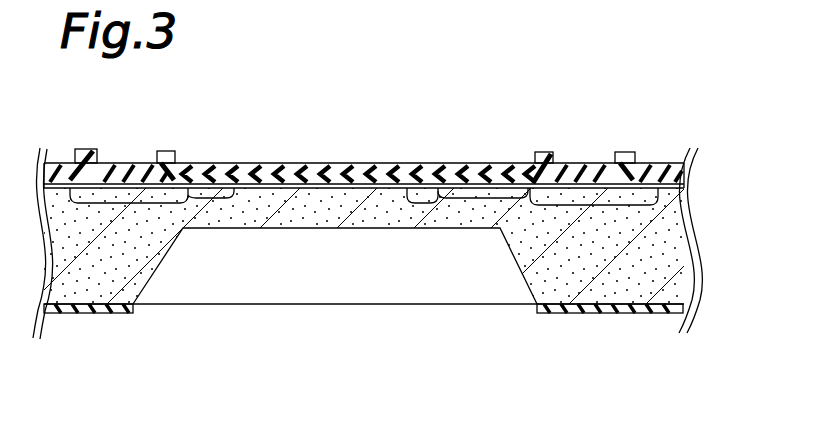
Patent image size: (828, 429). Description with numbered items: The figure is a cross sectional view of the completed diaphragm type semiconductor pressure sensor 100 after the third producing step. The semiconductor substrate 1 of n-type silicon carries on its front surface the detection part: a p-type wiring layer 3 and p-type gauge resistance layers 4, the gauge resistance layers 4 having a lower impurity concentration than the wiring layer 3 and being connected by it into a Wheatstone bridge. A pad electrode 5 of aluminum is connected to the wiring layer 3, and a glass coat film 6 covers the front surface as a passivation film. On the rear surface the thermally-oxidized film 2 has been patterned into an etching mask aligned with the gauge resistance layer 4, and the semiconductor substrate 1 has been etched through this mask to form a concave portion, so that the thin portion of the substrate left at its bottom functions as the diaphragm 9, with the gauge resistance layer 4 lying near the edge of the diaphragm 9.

The semiconductor substrate 1 is at (562, 238).
The thermally-oxidized film 2 is at (260, 163).
The wiring layer 3 is at (424, 163).
The gauge resistance layer 4 is at (478, 163).
The pad electrode 5 is at (125, 163).
The glass coat film 6 is at (288, 163).
The diaphragm 9 is at (270, 232).
The semiconductor pressure sensor 100 is at (632, 352).